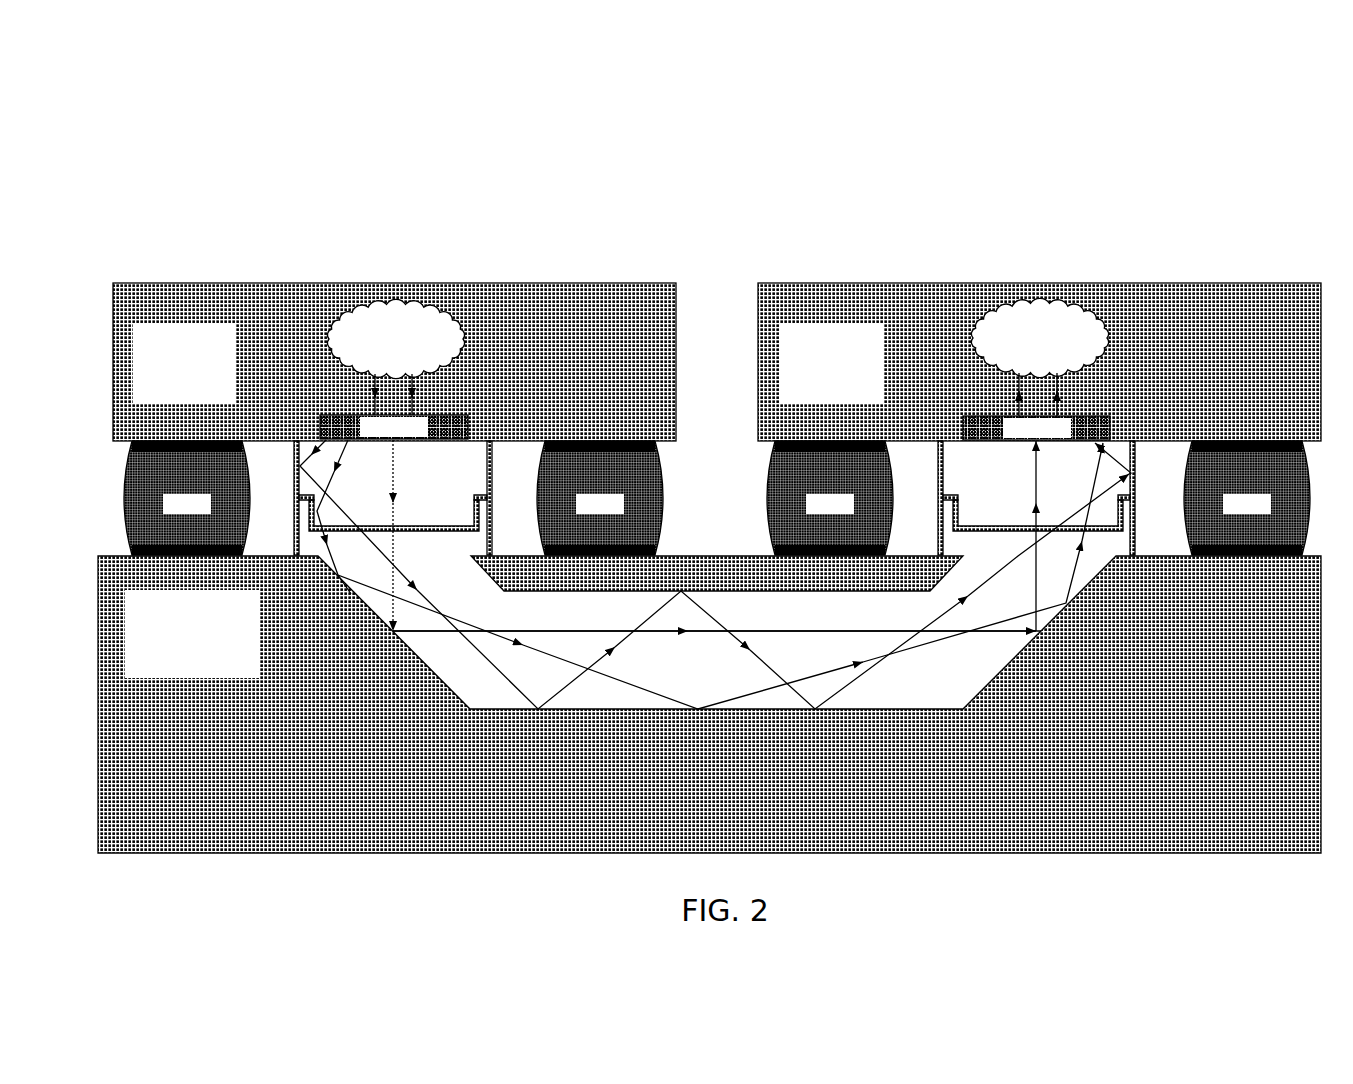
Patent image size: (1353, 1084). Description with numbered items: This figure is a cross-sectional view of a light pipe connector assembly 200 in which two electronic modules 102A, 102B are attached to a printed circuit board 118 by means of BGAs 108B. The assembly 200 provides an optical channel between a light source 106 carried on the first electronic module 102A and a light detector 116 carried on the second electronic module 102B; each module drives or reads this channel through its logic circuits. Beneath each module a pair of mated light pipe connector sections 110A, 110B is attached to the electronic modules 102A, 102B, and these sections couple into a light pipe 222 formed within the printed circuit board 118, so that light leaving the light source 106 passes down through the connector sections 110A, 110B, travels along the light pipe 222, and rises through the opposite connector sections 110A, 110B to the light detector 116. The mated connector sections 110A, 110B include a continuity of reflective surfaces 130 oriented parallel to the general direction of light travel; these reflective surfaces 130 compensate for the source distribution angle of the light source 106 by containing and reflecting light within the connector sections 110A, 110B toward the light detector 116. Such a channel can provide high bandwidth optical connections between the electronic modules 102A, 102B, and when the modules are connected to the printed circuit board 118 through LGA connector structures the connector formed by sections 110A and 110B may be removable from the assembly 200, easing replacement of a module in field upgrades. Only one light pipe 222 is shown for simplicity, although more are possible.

The light pipe connector assembly 200 is at (262, 184).
The electronic module 102A is at (394, 362).
The electronic module 102B is at (1039, 362).
The light source 106 is at (394, 427).
The light detector 116 is at (1036, 428).
The BGA 108B is at (717, 498).
The light pipe connector section 110A is at (714, 474).
The light pipe connector section 110B is at (716, 527).
The reflective surface 130 is at (292, 521).
The printed circuit board 118 is at (709, 704).
The light pipe 222 is at (717, 650).